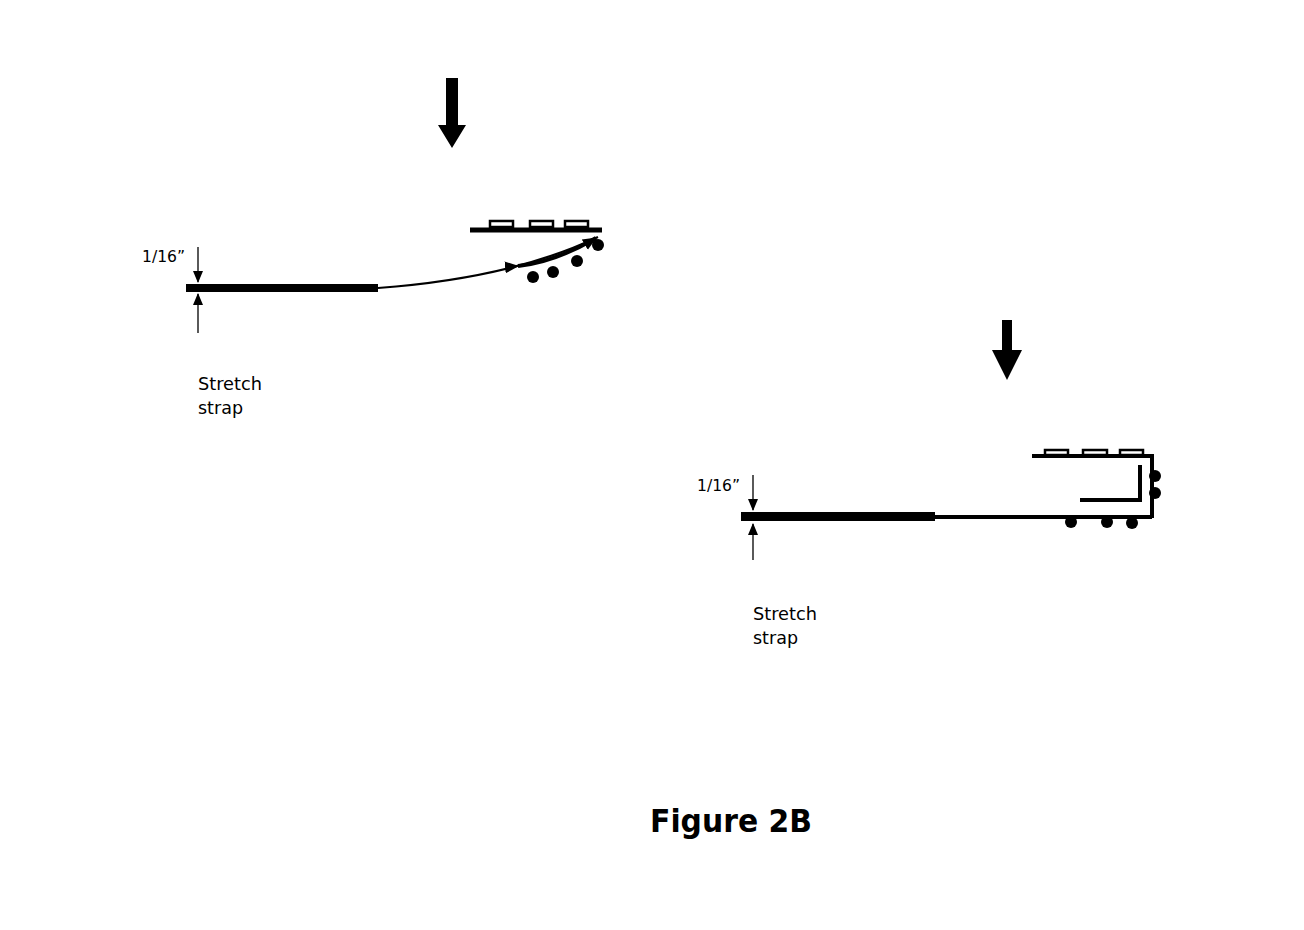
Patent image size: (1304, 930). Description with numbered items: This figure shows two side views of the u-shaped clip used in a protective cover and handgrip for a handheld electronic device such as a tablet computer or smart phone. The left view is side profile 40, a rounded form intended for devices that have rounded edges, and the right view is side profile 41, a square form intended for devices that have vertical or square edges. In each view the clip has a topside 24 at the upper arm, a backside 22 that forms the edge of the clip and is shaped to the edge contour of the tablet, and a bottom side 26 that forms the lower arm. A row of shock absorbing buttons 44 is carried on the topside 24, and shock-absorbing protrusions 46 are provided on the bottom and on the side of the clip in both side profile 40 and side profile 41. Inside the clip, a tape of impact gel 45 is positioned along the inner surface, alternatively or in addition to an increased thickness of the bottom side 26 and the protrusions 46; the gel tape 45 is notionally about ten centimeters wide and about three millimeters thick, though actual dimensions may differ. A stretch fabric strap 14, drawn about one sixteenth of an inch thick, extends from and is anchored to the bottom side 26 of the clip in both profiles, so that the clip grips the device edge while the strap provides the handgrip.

The stretch fabric strap 14 is at (270, 296).
The backside 22 is at (610, 233).
The topside 24 is at (477, 222).
The bottom side 26 is at (463, 289).
The side profile 40 is at (470, 94).
The side profile 41 is at (1025, 331).
The shock absorbing button 44 is at (538, 220).
The gel tape 45 is at (518, 273).
The shock-absorbing protrusion 46 is at (565, 278).